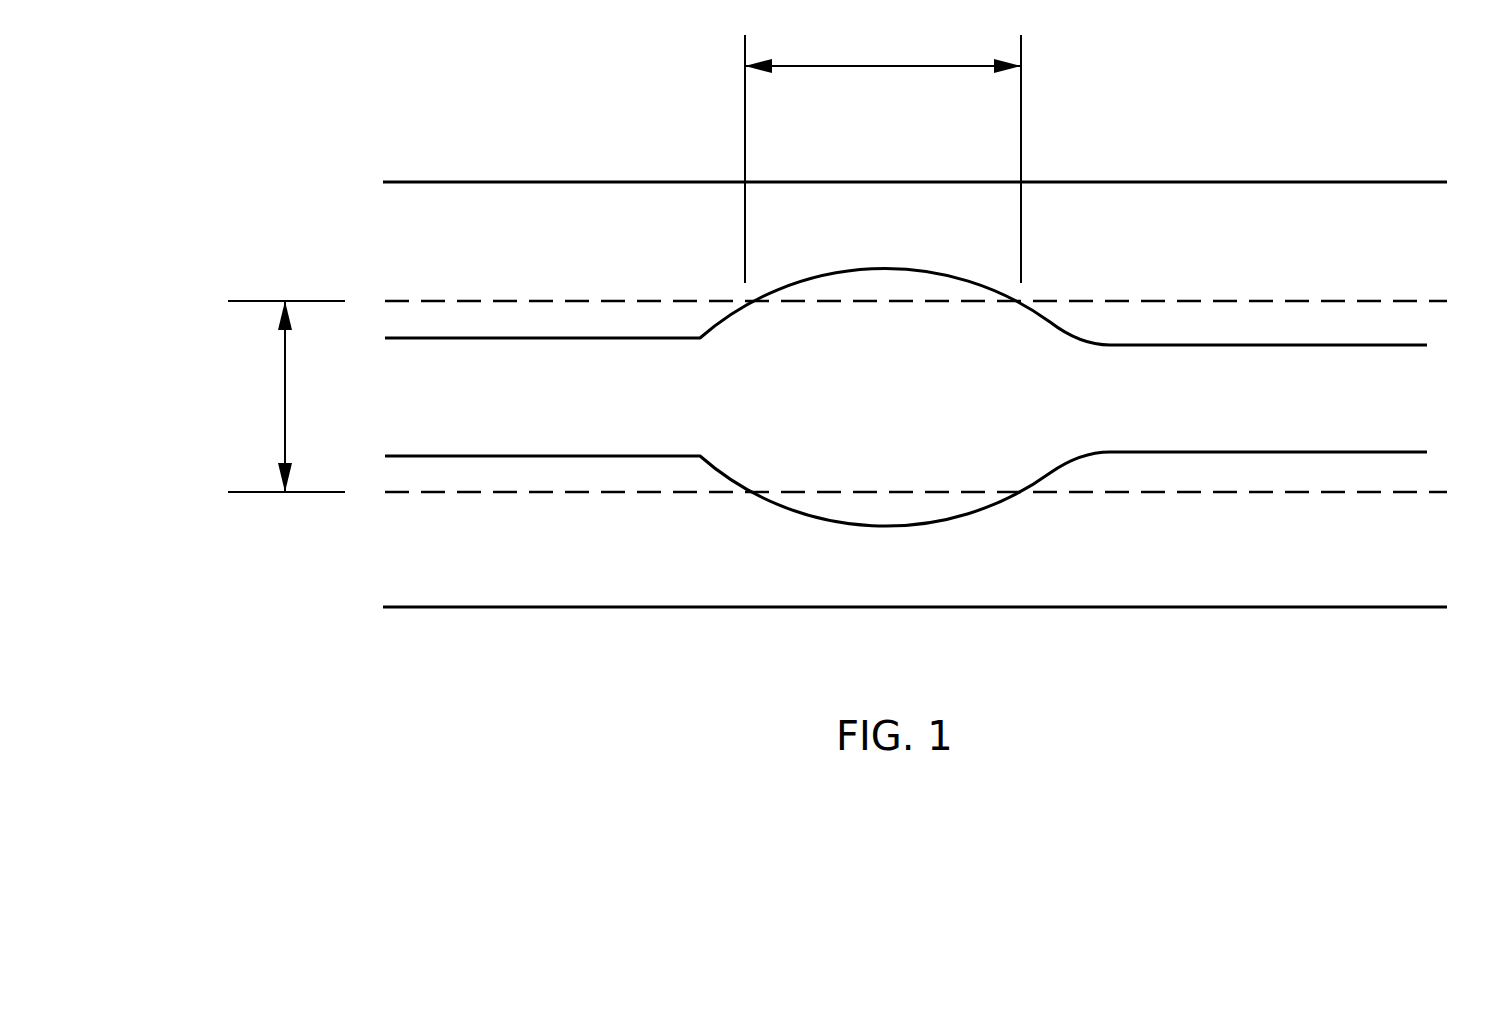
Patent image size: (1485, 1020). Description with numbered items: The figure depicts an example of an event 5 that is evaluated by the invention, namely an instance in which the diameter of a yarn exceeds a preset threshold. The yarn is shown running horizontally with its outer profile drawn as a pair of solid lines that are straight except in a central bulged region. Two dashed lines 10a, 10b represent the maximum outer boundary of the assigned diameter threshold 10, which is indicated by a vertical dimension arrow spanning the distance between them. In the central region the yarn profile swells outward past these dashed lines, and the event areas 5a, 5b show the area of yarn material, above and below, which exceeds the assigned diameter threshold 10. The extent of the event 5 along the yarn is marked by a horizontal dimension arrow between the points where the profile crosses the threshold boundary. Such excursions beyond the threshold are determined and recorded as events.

The event 5 is at (936, 66).
The event area 5a is at (880, 265).
The event area 5b is at (815, 528).
The assigned diameter threshold 10 is at (285, 393).
The line representing maximum outer boundary of assigned diameter threshold 10a is at (474, 300).
The line representing maximum outer boundary of assigned diameter threshold 10b is at (442, 492).